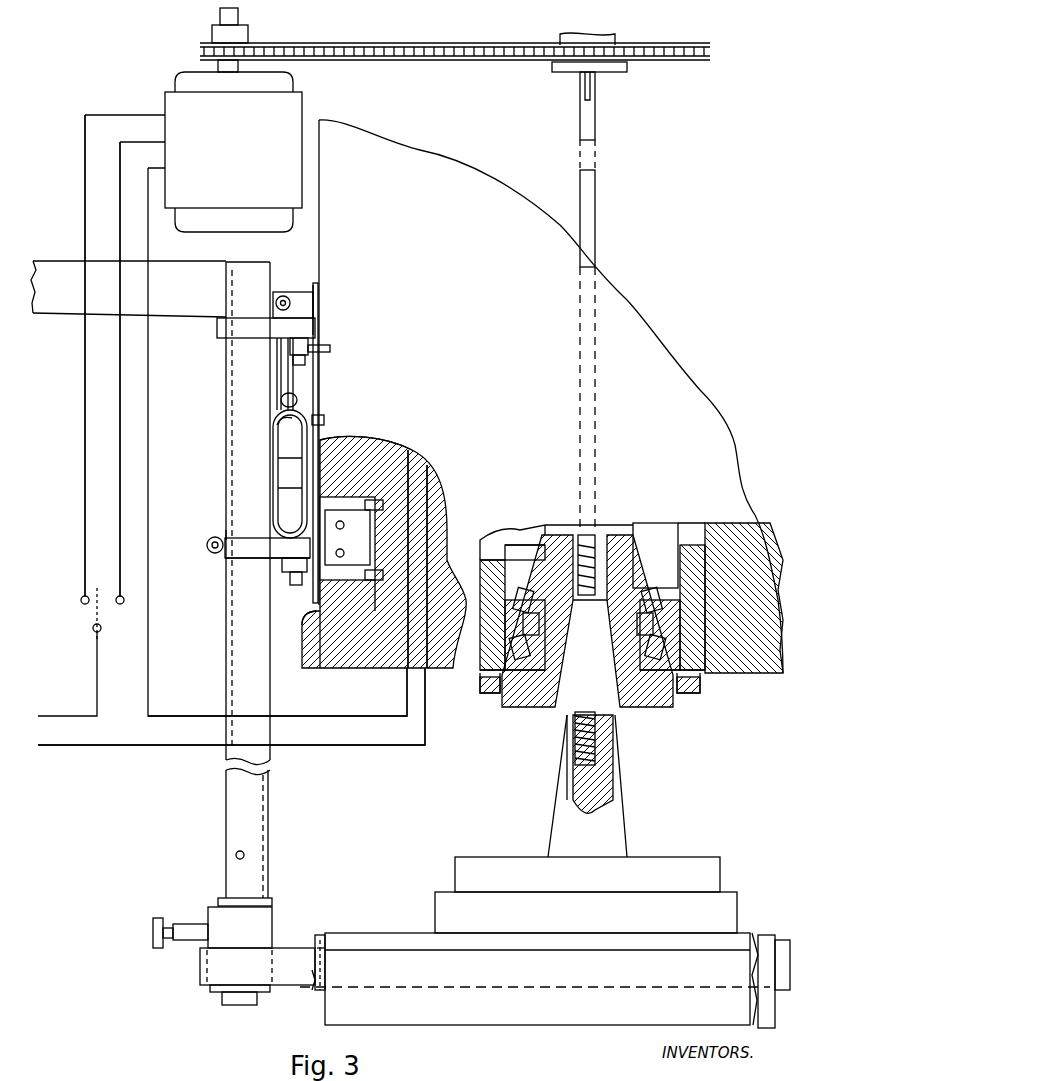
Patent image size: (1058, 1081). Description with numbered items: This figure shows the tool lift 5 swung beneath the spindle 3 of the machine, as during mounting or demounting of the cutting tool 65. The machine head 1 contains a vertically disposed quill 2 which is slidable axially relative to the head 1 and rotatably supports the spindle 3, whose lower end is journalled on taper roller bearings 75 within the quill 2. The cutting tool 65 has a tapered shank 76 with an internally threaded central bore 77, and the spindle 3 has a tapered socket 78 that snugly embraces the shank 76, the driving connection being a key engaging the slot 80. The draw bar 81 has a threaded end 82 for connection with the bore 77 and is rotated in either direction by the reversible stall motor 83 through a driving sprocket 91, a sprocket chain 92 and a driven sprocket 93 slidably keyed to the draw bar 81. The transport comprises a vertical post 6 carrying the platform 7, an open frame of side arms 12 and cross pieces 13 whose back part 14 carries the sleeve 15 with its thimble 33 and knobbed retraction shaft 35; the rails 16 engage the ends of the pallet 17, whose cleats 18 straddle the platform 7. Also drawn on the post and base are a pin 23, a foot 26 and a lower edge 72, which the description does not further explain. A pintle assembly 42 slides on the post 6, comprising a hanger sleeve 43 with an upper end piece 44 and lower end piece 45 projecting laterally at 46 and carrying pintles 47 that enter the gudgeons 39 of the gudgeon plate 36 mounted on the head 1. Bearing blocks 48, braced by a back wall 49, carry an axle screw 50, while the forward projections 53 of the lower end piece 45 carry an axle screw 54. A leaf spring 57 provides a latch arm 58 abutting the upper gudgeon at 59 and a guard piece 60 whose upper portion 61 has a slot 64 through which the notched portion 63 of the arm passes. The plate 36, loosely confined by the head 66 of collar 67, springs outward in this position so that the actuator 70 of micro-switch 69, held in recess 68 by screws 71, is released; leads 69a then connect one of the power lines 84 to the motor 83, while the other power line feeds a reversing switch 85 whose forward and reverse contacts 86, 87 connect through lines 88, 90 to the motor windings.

The head 1 is at (499, 210).
The quill 2 is at (97, 275).
The spindle 3 is at (690, 697).
The tool lift 5 is at (302, 897).
The post 6 is at (268, 795).
The platform 7 is at (301, 981).
The side arms 12 is at (312, 1000).
The cross pieces 13 is at (315, 948).
The curved back part 14 is at (200, 985).
The sleeve 15 is at (272, 915).
The rails 16 is at (322, 935).
The pallet 17 is at (412, 933).
The cleats 18 is at (513, 1005).
The column pin 23 is at (236, 855).
The base foot 26 is at (222, 1003).
The thimble 33 is at (180, 924).
The knobbed retraction shaft 35 is at (165, 948).
The gudgeon plate 36 is at (318, 392).
The gudgeons 39 is at (312, 345).
The pintle assembly 42 is at (226, 425).
The hanger sleeve 43 is at (226, 492).
The upper end piece 44 is at (217, 326).
The lower end piece 45 is at (235, 558).
The lateral projection of end pieces 46 is at (305, 325).
The pintles 47 is at (306, 367).
The bearing blocks 48 is at (300, 292).
The back wall 49 is at (318, 296).
The axle screw 50 is at (276, 303).
The forward projection of side arms 53 is at (222, 530).
The axle screw 54 is at (207, 546).
The leaf spring 57 is at (325, 420).
The latch arm 58 is at (340, 442).
The abutting engagement 59 is at (279, 355).
The guard piece 60 is at (275, 480).
The upper portion of guard piece 61 is at (281, 398).
The notch 63 is at (275, 425).
The slot 64 is at (375, 450).
The cutting tool 65 is at (668, 857).
The head of collar 66 is at (303, 613).
The collar 67 is at (375, 640).
The recess 68 is at (410, 490).
The micro-switch 69 is at (440, 538).
The electrical leads 69a is at (195, 716).
The actuator 70 is at (347, 537).
The screws 71 is at (385, 505).
The head lower edge 72 is at (322, 668).
The taper roller bearings 75 is at (656, 588).
The tapered shank 76 is at (617, 790).
The central bore 77 is at (612, 745).
The tapered socket 78 is at (560, 668).
The slot 80 is at (565, 780).
The draw bar 81 is at (597, 215).
The threaded end 82 is at (618, 530).
The reversible stall motor 83 is at (290, 103).
The power lines 84 is at (320, 746).
The reversing switch 85 is at (93, 630).
The forward contact 86 is at (80, 605).
The reverse contact 87 is at (120, 605).
The line 88 is at (83, 355).
The line 90 is at (118, 400).
The driving sprocket 91 is at (210, 45).
The sprocket chain 92 is at (403, 45).
The driven sprocket 93 is at (560, 45).